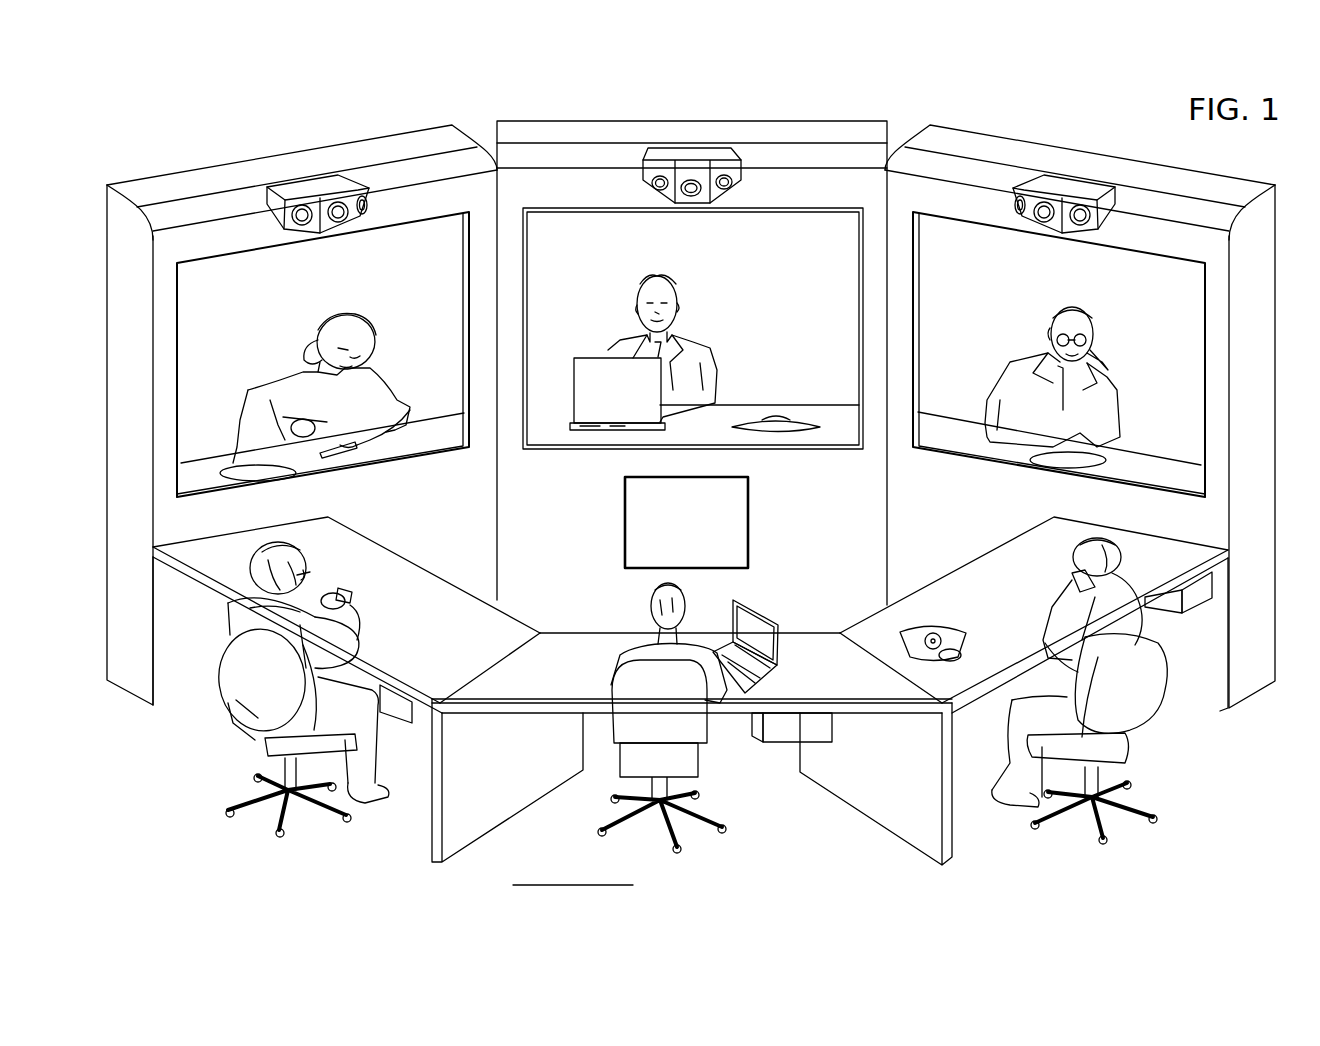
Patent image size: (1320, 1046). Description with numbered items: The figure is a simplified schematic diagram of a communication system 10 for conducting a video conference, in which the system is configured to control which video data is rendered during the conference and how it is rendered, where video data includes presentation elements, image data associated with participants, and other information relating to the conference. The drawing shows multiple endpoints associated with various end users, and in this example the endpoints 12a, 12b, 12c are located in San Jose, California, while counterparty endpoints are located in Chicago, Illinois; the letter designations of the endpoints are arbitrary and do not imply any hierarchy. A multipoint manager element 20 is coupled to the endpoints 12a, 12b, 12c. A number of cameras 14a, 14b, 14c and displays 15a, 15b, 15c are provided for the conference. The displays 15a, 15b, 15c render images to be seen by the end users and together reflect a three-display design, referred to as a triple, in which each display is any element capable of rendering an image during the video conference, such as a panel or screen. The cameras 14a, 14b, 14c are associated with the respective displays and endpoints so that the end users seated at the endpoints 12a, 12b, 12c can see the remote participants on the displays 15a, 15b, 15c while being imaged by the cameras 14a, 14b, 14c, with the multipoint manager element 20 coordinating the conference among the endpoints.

The communication system 10 is at (152, 104).
The endpoint 12a is at (397, 710).
The endpoint 12b is at (787, 732).
The endpoint 12c is at (1193, 595).
The camera 14a is at (320, 185).
The camera 14b is at (690, 153).
The camera 14c is at (1062, 185).
The display 15a is at (431, 279).
The display 15b is at (805, 260).
The display 15c is at (1171, 299).
The multipoint manager element 20 is at (748, 522).